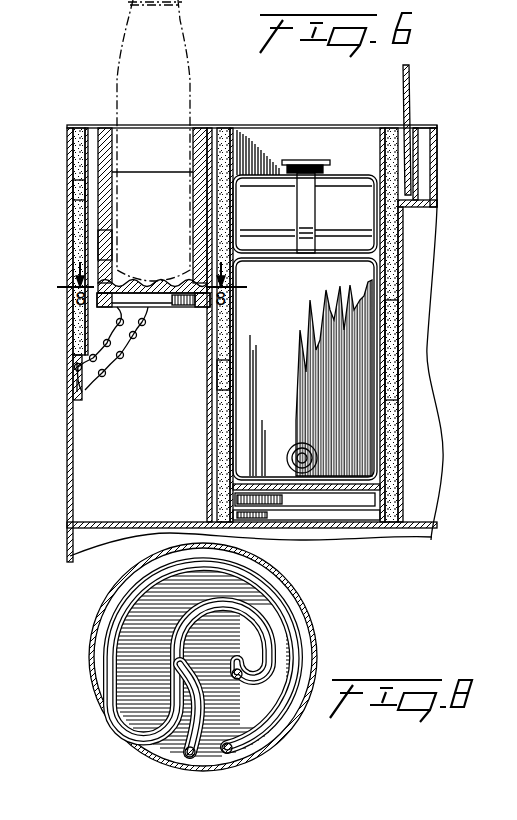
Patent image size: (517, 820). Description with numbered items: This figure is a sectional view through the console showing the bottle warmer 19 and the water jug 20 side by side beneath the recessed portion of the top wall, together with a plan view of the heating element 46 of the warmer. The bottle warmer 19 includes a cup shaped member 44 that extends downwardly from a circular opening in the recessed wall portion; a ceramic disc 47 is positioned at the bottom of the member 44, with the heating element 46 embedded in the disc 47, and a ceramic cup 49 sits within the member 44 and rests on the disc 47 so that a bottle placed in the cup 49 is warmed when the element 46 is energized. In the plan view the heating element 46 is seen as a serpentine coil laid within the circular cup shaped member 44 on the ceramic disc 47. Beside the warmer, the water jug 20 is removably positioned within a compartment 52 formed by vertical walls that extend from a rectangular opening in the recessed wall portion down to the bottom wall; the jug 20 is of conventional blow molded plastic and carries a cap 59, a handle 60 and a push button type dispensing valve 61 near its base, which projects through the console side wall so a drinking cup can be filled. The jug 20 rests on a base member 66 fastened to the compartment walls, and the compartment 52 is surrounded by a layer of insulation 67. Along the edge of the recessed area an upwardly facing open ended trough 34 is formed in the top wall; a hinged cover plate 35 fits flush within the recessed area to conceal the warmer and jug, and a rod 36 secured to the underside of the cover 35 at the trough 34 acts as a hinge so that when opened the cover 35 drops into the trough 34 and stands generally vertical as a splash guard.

In FIG. 6, the bottle warmer 19 is at (112, 126).
In FIG. 6, the water jug 20 is at (348, 313).
In FIG. 6, the trough 34 is at (420, 156).
In FIG. 6, the cover plate 35 is at (408, 95).
In FIG. 6, the rod 36 is at (418, 188).
In FIG. 6, the cup shaped member 44 is at (97, 197).
In FIG. 8, the cup shaped member 44 is at (98, 660).
In FIG. 8, the heating element 46 is at (112, 672).
In FIG. 6, the ceramic disc 47 is at (112, 300).
In FIG. 8, the ceramic disc 47 is at (275, 650).
In FIG. 6, the ceramic cup 49 is at (106, 250).
In FIG. 6, the compartment 52 is at (216, 382).
In FIG. 6, the cap 59 is at (300, 165).
In FIG. 6, the handle 60 is at (305, 222).
In FIG. 6, the dispensing valve 61 is at (307, 458).
In FIG. 6, the base member 66 is at (352, 498).
In FIG. 6, the insulation 67 is at (393, 400).